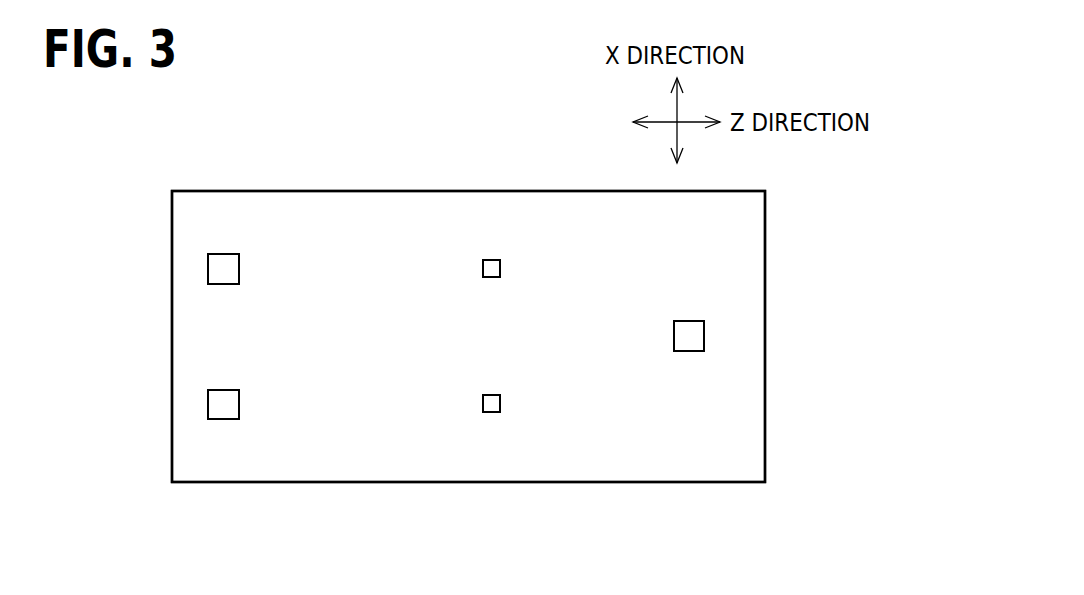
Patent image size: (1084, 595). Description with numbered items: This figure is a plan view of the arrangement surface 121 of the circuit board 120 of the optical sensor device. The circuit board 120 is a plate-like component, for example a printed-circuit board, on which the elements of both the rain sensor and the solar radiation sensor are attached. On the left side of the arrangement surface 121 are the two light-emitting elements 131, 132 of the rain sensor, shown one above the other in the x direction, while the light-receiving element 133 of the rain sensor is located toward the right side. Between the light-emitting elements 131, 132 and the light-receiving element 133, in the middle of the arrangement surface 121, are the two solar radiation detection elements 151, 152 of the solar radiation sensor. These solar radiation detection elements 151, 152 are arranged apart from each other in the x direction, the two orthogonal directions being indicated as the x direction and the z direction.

The circuit board 120 is at (766, 258).
The arrangement surface 121 is at (740, 220).
The light-emitting element 131 is at (207, 404).
The light-emitting element 132 is at (207, 267).
The light-receiving element 133 is at (705, 335).
The solar radiation detection element 151 is at (492, 413).
The solar radiation detection element 152 is at (489, 259).